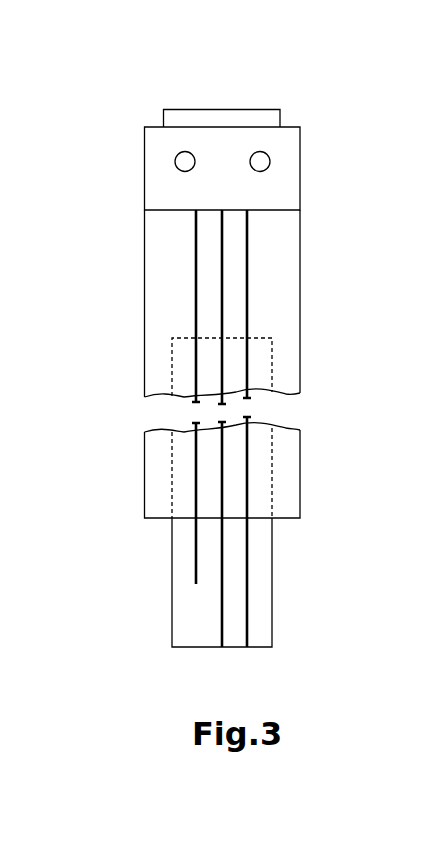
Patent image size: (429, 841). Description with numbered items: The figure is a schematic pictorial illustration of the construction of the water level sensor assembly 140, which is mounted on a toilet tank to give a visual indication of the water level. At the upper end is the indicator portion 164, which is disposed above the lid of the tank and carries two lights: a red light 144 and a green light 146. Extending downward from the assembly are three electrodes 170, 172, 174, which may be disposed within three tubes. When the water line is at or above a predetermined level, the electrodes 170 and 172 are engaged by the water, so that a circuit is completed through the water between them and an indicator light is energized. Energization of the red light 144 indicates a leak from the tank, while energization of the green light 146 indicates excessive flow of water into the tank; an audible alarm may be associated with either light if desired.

The water level sensor assembly 140 is at (224, 372).
The red light 144 is at (257, 152).
The green light 146 is at (183, 152).
The indicator portion 164 is at (167, 129).
The electrode 170 is at (248, 595).
The electrode 172 is at (223, 630).
The electrode 174 is at (193, 555).